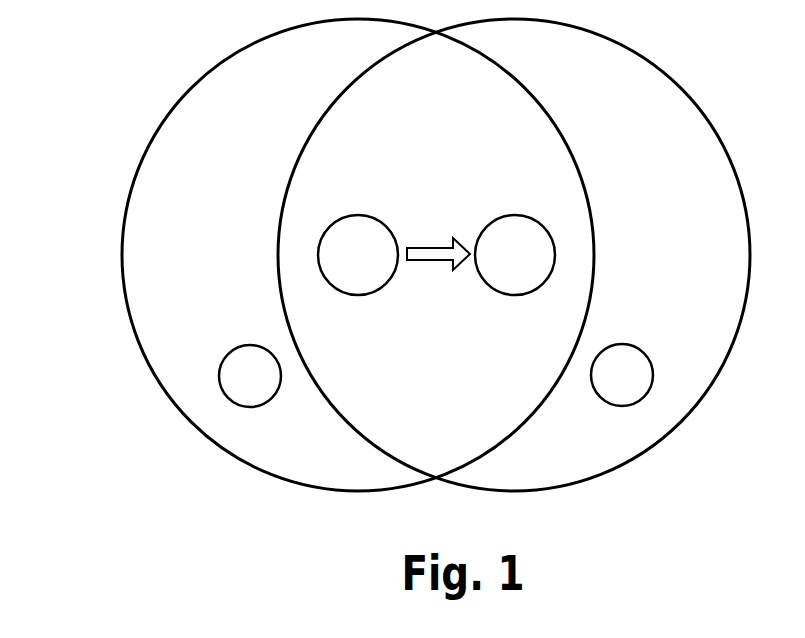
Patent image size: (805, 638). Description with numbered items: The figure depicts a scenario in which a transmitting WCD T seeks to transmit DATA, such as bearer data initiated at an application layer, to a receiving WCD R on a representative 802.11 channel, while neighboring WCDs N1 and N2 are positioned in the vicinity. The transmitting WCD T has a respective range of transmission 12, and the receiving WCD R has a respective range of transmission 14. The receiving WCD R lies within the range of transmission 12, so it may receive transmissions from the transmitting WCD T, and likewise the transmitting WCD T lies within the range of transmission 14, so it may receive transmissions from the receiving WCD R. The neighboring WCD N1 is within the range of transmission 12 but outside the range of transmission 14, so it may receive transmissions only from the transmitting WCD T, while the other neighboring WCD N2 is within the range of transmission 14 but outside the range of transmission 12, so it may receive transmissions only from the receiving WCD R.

The range of transmission of the transmitting WCD 12 is at (123, 293).
The range of transmission of the receiving WCD 14 is at (749, 293).
The transmitting WCD T is at (358, 255).
The receiving WCD R is at (515, 255).
The data DATA is at (438, 238).
The neighboring WCD N1 is at (250, 376).
The neighboring WCD N2 is at (622, 375).